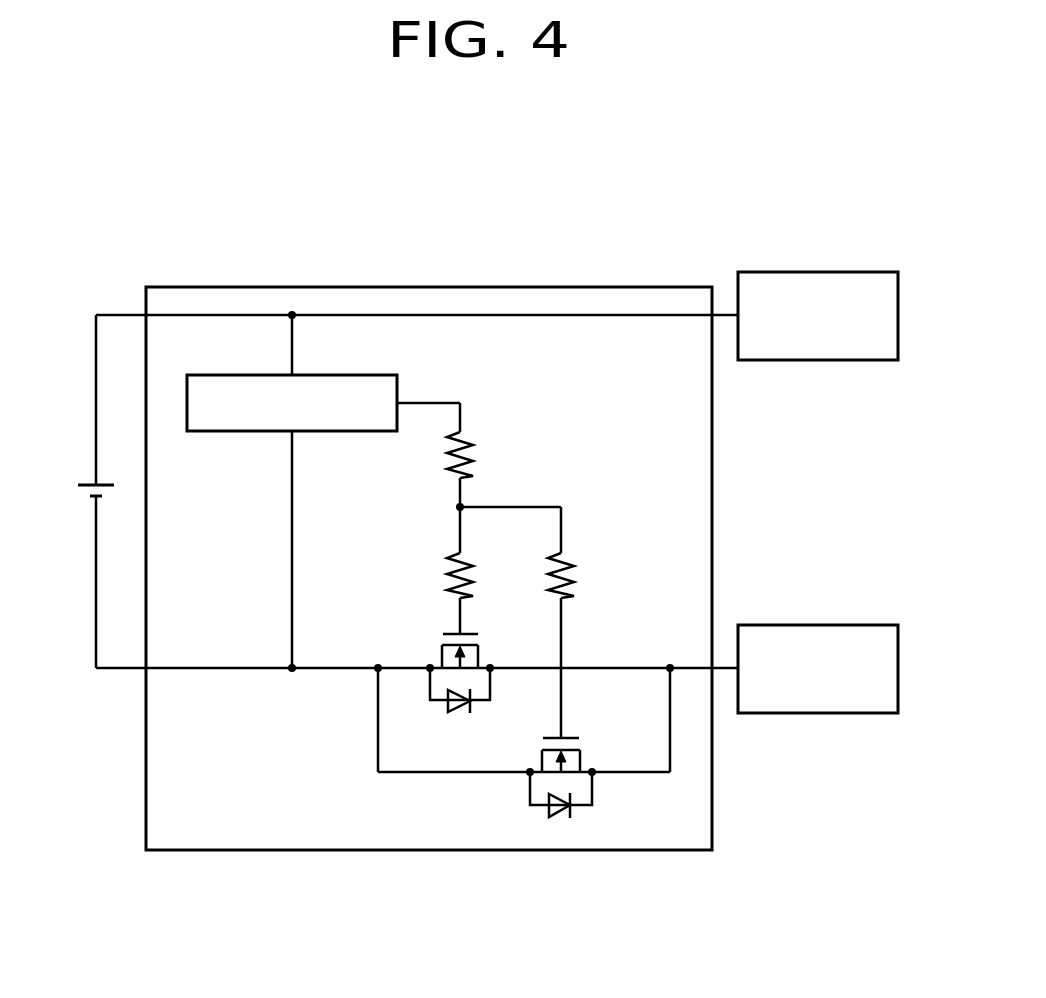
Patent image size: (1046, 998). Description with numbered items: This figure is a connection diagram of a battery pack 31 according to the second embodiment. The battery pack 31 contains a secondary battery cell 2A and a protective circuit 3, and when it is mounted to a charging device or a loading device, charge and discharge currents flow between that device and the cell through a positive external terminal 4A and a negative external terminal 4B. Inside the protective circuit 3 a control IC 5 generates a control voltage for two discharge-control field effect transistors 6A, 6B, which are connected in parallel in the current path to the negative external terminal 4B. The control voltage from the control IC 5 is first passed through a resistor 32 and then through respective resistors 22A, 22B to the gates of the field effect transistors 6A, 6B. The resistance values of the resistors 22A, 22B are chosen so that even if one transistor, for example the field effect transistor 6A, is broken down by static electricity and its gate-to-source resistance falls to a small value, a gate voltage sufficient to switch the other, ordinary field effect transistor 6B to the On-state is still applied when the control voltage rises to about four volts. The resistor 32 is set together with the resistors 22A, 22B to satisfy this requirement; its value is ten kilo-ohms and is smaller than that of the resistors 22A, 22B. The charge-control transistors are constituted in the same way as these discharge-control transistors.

The battery pack 31 is at (637, 260).
The protective circuit 3 is at (712, 489).
The secondary battery cell 2A is at (88, 485).
The positive external terminal 4A is at (815, 272).
The negative external terminal 4B is at (815, 625).
The control IC 5 is at (380, 375).
The resistor 32 is at (470, 460).
The resistor 22A is at (450, 592).
The resistor 22B is at (572, 586).
The field effect transistor 6A is at (443, 665).
The field effect transistor 6B is at (580, 770).